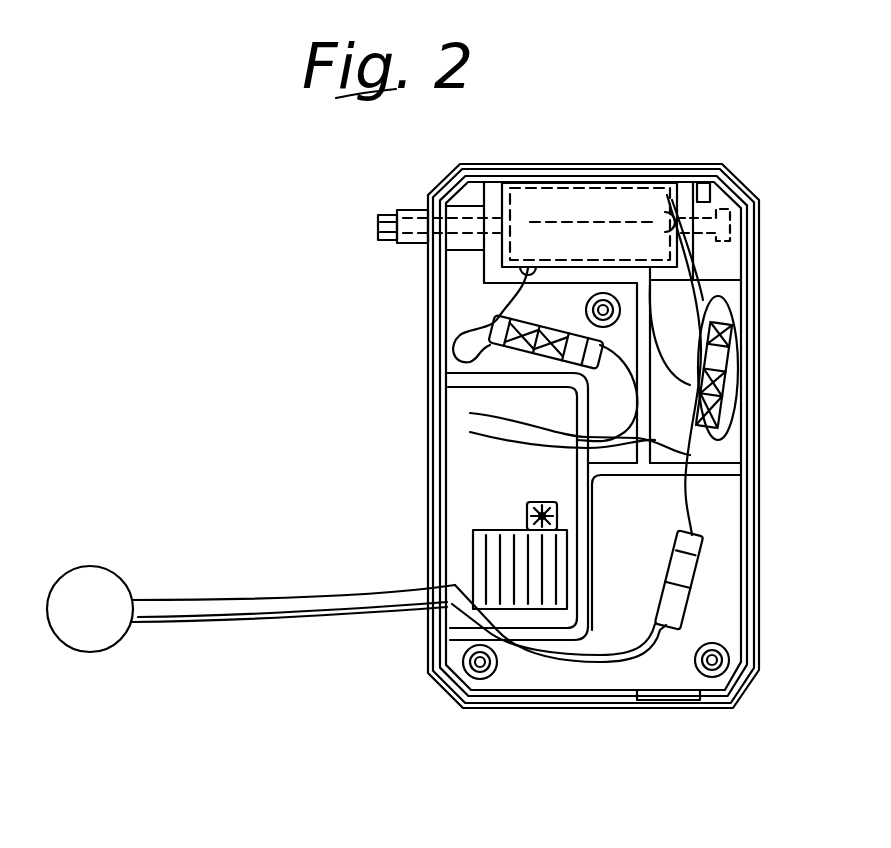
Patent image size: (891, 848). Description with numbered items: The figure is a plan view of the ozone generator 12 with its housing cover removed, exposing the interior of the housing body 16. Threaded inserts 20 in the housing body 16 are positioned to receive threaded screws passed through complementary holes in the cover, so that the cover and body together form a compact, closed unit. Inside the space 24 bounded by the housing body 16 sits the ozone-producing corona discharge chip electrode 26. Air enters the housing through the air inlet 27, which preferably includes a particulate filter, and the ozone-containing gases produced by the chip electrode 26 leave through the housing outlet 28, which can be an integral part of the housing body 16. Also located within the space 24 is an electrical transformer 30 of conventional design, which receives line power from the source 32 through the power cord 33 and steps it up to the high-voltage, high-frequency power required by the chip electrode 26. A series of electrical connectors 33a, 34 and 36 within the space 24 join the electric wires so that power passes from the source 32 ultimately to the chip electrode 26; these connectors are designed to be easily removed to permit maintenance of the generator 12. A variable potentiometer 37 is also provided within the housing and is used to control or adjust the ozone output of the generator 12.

The ozone generator 12 is at (777, 160).
The housing body 16 is at (758, 346).
The threaded inserts 20 is at (620, 308).
The space 24 is at (462, 290).
The corona discharge chip electrode 26 is at (621, 200).
The air inlet 27 is at (730, 233).
The housing outlet 28 is at (405, 210).
The electrical transformer 30 is at (478, 470).
The source 32 is at (117, 572).
The power cord 33 is at (317, 620).
The electrical connector 33a is at (725, 412).
The electrical connector 34 is at (455, 373).
The electrical connector 36 is at (700, 555).
The variable potentiometer 37 is at (525, 505).